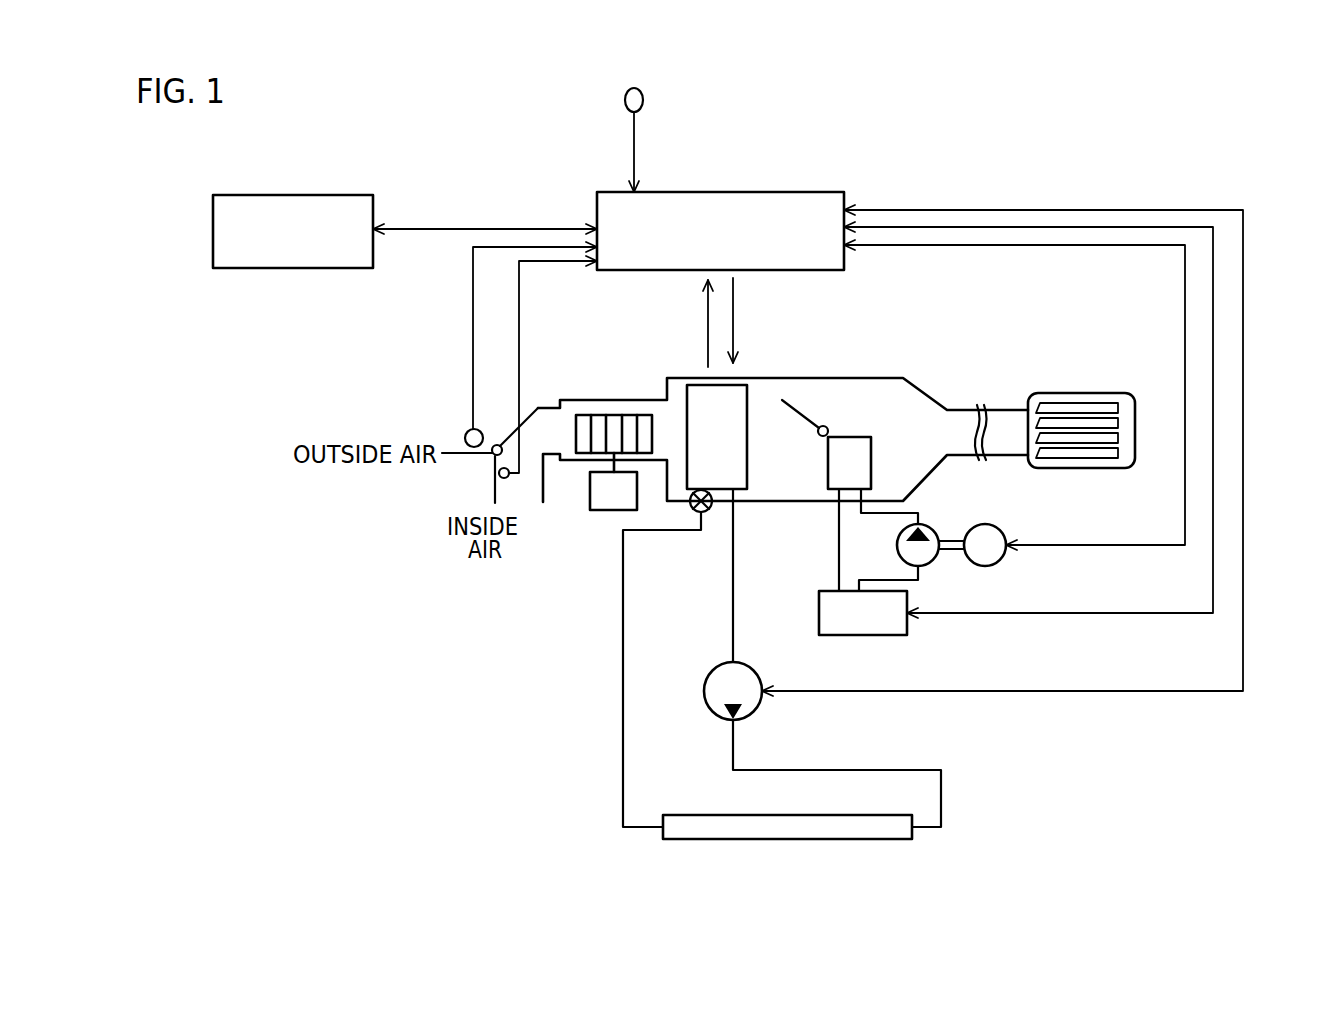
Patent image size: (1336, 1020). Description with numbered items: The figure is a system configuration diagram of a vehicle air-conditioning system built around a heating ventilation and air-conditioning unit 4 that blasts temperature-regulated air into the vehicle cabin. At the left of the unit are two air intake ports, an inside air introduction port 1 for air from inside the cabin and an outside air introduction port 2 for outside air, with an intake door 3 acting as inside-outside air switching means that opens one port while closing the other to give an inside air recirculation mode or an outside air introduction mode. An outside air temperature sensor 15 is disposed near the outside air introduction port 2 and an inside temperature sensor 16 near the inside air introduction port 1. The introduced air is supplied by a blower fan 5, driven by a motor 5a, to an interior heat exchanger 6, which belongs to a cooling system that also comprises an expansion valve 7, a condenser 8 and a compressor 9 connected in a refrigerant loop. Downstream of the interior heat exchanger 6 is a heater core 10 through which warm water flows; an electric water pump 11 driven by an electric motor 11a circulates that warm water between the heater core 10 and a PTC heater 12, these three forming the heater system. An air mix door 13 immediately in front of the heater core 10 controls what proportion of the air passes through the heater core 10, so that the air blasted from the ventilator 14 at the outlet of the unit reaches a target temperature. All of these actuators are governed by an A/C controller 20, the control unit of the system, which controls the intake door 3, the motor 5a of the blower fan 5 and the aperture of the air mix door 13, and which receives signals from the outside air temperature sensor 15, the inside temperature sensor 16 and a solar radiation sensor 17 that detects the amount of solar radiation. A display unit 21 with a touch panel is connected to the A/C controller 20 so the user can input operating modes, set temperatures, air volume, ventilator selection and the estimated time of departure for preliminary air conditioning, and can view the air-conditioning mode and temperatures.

The inside air introduction port 1 is at (493, 487).
The outside air introduction port 2 is at (453, 453).
The intake door 3 is at (507, 442).
The heating ventilation and air-conditioning (HVAC) unit 4 is at (622, 398).
The blower fan 5 is at (575, 440).
The motor 5a is at (608, 510).
The interior heat exchanger 6 is at (747, 400).
The expansion valve 7 is at (705, 512).
The condenser 8 is at (787, 839).
The compressor 9 is at (708, 672).
The heater core 10 is at (849, 437).
The electric water pump 11 is at (940, 528).
The electric motor 11a is at (1003, 532).
The PTC heater 12 is at (819, 603).
The air mix door 13 is at (806, 413).
The ventilator 14 is at (1068, 385).
The outside air temperature sensor 15 is at (467, 430).
The inside temperature sensor 16 is at (510, 478).
The solar radiation sensor 17 is at (641, 92).
The A/C controller 20 is at (683, 192).
The display unit 21 is at (273, 195).